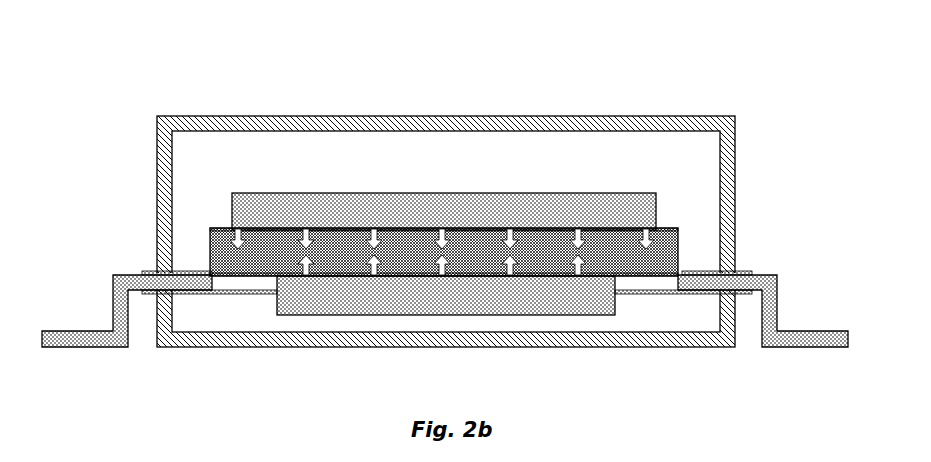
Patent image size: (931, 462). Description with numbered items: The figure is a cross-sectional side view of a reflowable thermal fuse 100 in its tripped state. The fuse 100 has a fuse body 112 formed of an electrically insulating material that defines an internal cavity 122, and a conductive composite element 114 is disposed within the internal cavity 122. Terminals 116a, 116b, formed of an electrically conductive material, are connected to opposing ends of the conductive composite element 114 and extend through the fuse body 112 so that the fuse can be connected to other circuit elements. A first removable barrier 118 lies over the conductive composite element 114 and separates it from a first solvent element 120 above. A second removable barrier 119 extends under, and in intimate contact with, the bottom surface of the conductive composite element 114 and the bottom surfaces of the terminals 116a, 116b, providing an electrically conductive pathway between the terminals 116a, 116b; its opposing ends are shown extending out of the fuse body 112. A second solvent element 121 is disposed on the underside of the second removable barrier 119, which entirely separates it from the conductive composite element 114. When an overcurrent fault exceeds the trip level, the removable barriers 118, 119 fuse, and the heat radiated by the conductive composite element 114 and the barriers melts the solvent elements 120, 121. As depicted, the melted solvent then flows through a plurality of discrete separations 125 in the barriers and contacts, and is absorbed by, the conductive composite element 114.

The reflowable thermal fuse 100 is at (108, 98).
The fuse body 112 is at (232, 126).
The conductive composite element 114 is at (261, 263).
The terminal 116a is at (122, 278).
The terminal 116b is at (775, 277).
The first removable barrier 118 is at (558, 231).
The second removable barrier 119 is at (532, 277).
The first solvent element 120 is at (340, 198).
The second solvent element 121 is at (572, 302).
The internal cavity 122 is at (701, 165).
The separations 125 is at (512, 230).